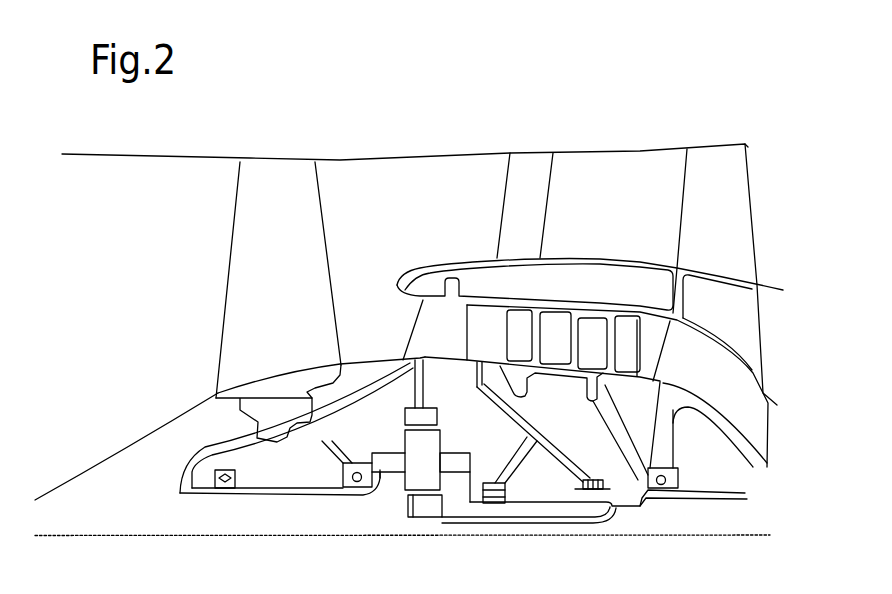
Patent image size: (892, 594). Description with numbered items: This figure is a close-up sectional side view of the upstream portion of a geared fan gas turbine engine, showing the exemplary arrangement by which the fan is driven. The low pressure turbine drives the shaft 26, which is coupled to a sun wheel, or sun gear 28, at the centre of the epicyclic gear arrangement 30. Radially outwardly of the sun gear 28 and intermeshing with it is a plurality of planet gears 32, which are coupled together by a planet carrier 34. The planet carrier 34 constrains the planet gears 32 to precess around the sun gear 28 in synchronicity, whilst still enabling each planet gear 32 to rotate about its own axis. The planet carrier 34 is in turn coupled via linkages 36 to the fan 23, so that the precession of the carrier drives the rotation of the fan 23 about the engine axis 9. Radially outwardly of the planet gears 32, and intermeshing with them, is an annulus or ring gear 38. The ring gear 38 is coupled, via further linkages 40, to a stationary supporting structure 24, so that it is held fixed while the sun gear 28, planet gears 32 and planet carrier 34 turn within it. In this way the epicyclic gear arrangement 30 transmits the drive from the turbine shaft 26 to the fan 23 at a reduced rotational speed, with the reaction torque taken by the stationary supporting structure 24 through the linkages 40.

The engine axis 9 is at (190, 537).
The fan 23 is at (250, 311).
The stationary supporting structure 24 is at (433, 329).
The shaft 26 is at (650, 505).
The sun gear 28 is at (422, 505).
The epicyclic gear arrangement 30 is at (412, 478).
The planet gears 32 is at (403, 496).
The planet carrier 34 is at (466, 488).
The linkages 36 is at (370, 500).
The ring gear 38 is at (405, 418).
The linkages 40 is at (430, 378).